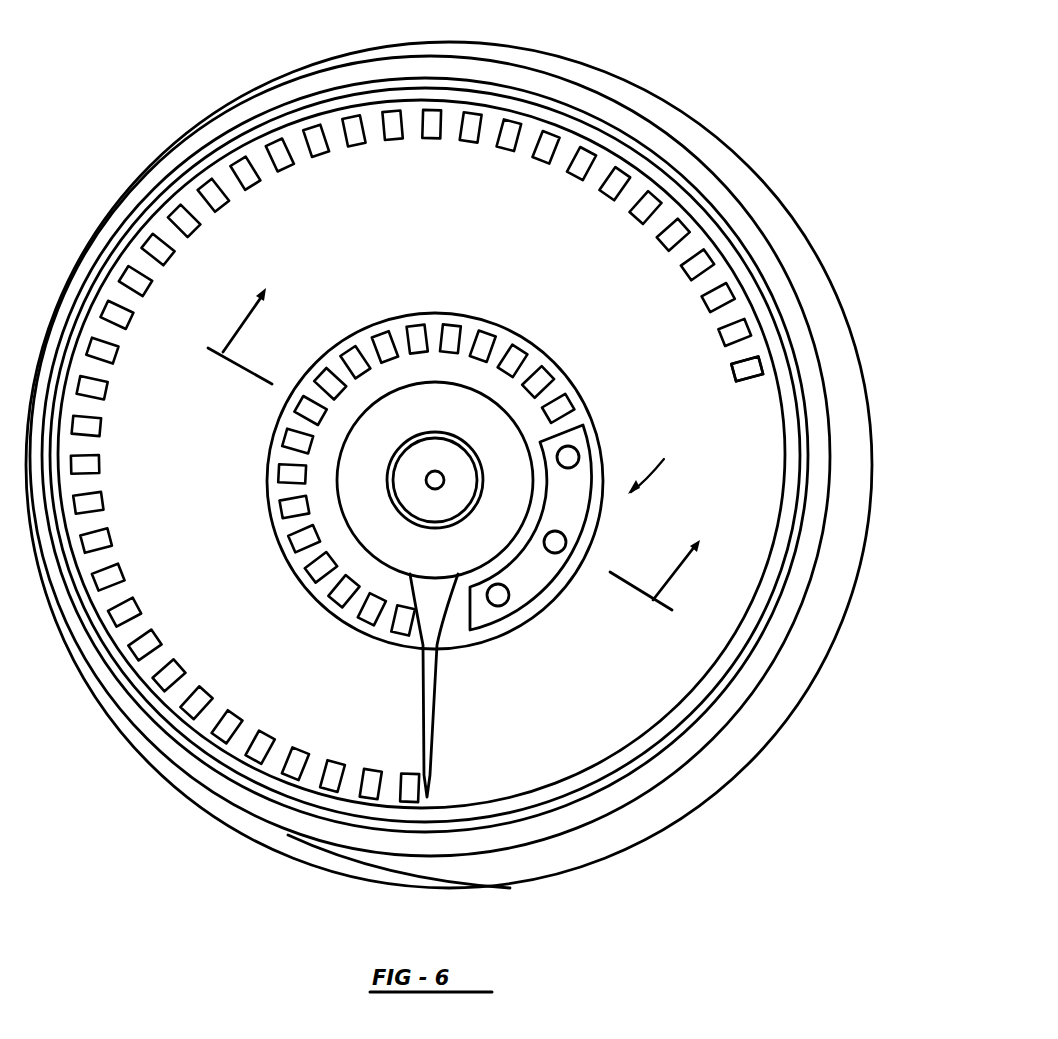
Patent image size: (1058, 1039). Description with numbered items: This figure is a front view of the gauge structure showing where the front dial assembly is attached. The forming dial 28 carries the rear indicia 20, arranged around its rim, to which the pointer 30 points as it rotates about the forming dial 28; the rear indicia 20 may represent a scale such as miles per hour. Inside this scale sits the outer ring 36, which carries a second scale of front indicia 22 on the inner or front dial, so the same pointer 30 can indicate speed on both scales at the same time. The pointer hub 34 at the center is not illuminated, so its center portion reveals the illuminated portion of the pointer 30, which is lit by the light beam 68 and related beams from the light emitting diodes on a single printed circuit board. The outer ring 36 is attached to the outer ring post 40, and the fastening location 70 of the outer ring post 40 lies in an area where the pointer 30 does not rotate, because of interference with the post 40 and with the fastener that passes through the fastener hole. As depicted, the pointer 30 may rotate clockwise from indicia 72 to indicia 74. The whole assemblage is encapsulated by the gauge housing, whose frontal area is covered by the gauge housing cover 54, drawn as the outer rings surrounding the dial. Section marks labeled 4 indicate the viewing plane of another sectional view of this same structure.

The rear indicia 20 is at (622, 182).
The front indicia 22 is at (350, 350).
The forming dial 28 is at (314, 233).
The pointer 30 is at (464, 458).
The pointer hub 34 is at (395, 440).
The outer ring 36 is at (490, 327).
The outer ring post 40 is at (452, 638).
The gauge housing cover 54 is at (190, 540).
The light beam 68 is at (557, 553).
The fastening location 70 is at (655, 464).
The indicia 72 is at (400, 790).
The indicia 74 is at (750, 377).
The section line 4 is at (432, 476).